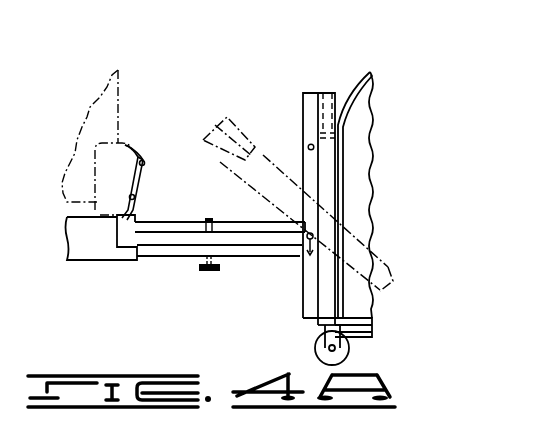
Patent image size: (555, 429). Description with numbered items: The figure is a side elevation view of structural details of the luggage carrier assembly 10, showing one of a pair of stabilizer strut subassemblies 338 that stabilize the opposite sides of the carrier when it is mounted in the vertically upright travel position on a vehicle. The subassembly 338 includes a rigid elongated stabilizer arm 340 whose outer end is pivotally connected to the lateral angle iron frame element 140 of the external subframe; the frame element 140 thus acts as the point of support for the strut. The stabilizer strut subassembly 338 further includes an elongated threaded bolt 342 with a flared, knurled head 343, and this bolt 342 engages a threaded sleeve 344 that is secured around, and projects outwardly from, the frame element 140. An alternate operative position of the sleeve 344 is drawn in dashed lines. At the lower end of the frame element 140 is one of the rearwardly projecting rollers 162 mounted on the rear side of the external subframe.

The vehicle body wall 10 is at (353, 66).
The lateral angle iron frame element 140 is at (312, 178).
The rearwardly projecting roller 162 is at (316, 343).
The stabilizer strut subassembly 338 is at (142, 142).
The stabilizer arm 340 is at (153, 240).
The threaded bolt 342 is at (208, 218).
The knurled head 343 is at (217, 270).
The threaded sleeve 344 is at (258, 147).